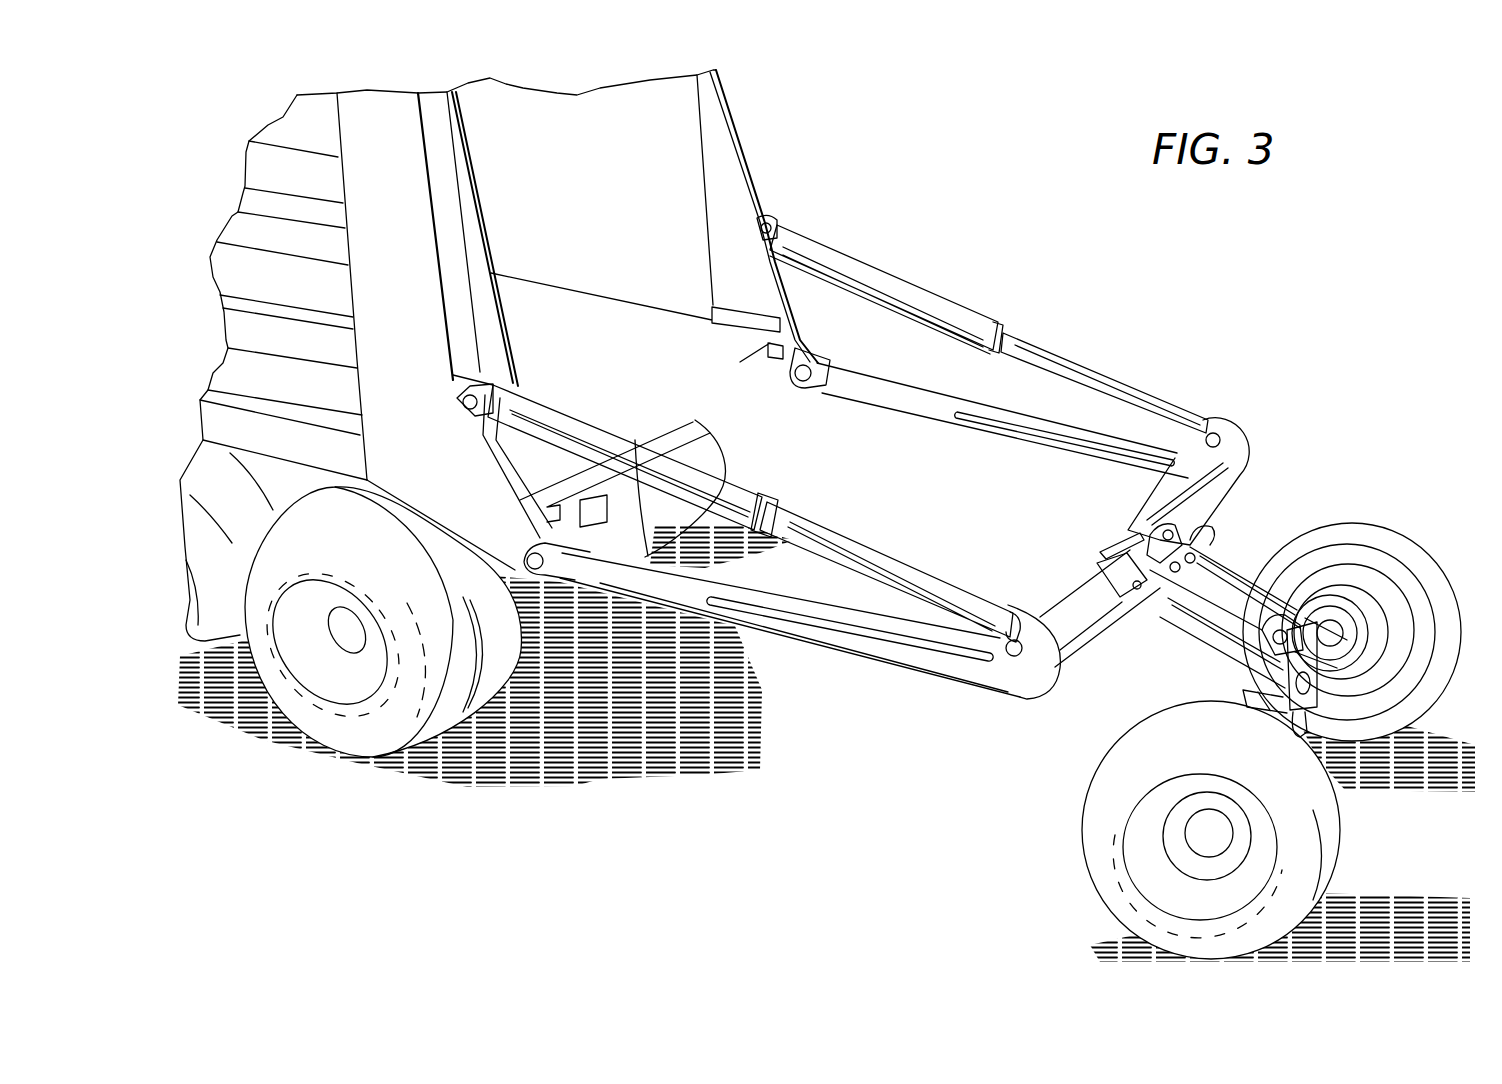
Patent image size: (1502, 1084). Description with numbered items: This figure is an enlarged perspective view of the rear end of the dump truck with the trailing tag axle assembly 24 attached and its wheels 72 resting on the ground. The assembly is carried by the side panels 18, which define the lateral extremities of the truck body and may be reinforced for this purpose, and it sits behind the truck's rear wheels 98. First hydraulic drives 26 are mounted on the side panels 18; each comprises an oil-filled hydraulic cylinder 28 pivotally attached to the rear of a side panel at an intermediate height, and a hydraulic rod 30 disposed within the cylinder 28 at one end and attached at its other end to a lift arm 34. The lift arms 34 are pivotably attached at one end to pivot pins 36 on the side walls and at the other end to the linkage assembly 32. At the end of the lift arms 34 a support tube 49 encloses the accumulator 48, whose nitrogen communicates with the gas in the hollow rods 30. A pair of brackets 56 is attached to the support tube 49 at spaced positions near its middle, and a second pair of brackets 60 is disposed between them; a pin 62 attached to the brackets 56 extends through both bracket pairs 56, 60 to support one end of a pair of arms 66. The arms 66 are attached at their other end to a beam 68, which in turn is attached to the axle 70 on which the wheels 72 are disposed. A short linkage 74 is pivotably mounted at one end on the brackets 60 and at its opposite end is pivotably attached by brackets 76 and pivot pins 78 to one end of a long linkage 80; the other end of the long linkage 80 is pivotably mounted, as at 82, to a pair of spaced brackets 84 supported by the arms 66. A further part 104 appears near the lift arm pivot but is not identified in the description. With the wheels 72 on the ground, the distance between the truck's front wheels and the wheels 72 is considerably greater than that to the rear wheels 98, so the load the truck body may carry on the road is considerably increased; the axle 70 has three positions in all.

The side panels 18 is at (499, 355).
The trailing tag axle assembly 24 is at (1040, 380).
The first hydraulic drives 26 is at (738, 513).
The hydraulic cylinders 28 is at (743, 490).
The hydraulic rods 30 is at (882, 558).
The linkage assembly 32 is at (1157, 587).
The lift arms 34 is at (683, 597).
The pivot pins 36 is at (533, 558).
The accumulator 48 is at (1120, 623).
The support tube 49 is at (1190, 477).
The brackets 56 is at (1147, 542).
The second pair of brackets 60 is at (1160, 540).
The pin 62 is at (1135, 584).
The arms 66 is at (1237, 663).
The beam 68 is at (1310, 717).
The axle 70 is at (1327, 650).
The wheels 72 is at (1120, 773).
The short linkage 74 is at (1193, 538).
The brackets 76 is at (1242, 580).
The pivot pins 78 is at (1190, 562).
The long linkage 80 is at (1352, 628).
The pivot mounting 82 is at (1330, 652).
The spaced brackets 84 is at (1330, 650).
The rear wheels 98 is at (365, 727).
The drawbar pivot 104 is at (790, 363).